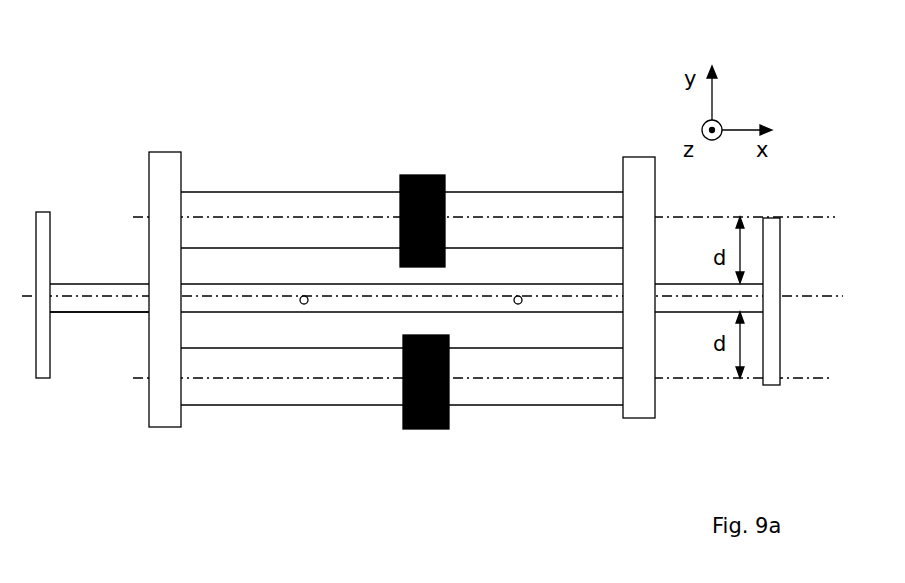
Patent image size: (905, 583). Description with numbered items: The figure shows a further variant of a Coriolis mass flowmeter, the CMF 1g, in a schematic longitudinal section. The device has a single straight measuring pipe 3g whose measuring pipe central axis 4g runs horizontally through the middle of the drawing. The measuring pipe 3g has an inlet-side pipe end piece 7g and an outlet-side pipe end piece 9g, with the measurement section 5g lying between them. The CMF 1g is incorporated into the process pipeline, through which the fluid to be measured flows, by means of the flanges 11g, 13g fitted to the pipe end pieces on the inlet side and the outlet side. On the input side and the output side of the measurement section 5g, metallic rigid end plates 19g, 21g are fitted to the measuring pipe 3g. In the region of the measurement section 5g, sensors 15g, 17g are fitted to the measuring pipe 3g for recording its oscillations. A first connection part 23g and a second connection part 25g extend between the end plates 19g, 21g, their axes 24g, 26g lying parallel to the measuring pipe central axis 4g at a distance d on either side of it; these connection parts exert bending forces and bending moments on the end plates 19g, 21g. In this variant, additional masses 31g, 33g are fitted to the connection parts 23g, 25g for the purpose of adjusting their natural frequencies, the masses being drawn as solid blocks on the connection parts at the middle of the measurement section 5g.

The Coriolis mass flowmeter 1g is at (460, 497).
The measuring pipe 3g is at (129, 318).
The measuring pipe central axis 4g is at (443, 313).
The measurement section 5g is at (255, 302).
The inlet-side pipe end piece 7g is at (102, 296).
The outlet-side pipe end piece 9g is at (687, 296).
The inlet-side flange 11g is at (47, 228).
The outlet-side flange 13g is at (775, 367).
The sensor 15g is at (306, 296).
The sensor 17g is at (517, 296).
The end plate 19g is at (167, 167).
The end plate 21g is at (633, 168).
The first connection part 23g is at (278, 203).
The axis of first connection part 24g is at (818, 217).
The second connection part 25g is at (228, 383).
The axis of second connection part 26g is at (499, 391).
The additional mass 31g is at (403, 429).
The additional mass 33g is at (418, 175).